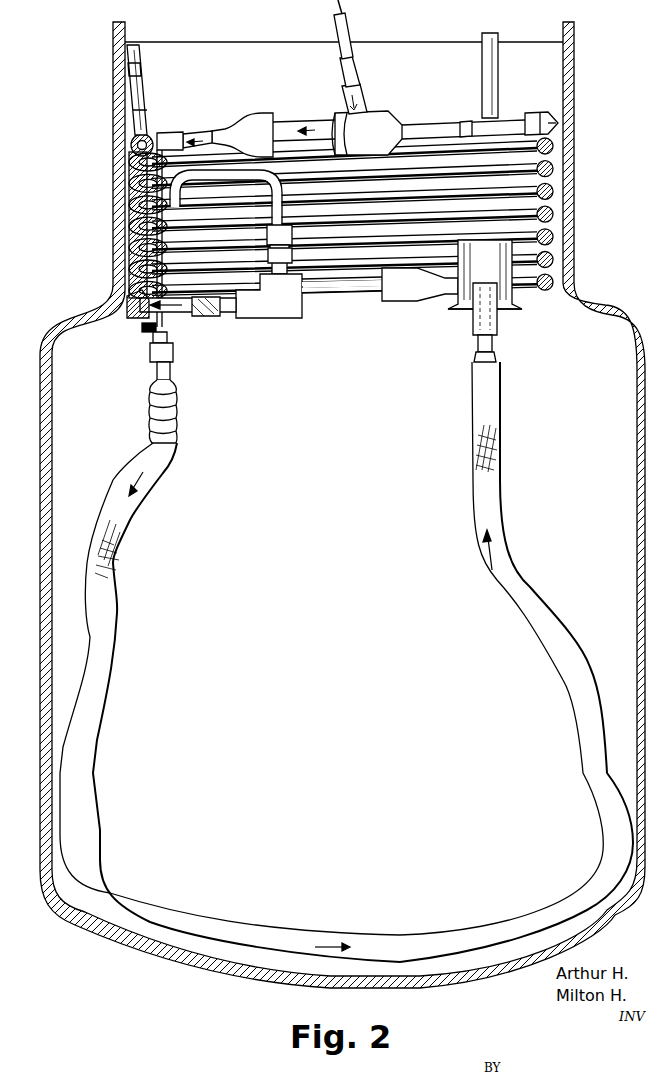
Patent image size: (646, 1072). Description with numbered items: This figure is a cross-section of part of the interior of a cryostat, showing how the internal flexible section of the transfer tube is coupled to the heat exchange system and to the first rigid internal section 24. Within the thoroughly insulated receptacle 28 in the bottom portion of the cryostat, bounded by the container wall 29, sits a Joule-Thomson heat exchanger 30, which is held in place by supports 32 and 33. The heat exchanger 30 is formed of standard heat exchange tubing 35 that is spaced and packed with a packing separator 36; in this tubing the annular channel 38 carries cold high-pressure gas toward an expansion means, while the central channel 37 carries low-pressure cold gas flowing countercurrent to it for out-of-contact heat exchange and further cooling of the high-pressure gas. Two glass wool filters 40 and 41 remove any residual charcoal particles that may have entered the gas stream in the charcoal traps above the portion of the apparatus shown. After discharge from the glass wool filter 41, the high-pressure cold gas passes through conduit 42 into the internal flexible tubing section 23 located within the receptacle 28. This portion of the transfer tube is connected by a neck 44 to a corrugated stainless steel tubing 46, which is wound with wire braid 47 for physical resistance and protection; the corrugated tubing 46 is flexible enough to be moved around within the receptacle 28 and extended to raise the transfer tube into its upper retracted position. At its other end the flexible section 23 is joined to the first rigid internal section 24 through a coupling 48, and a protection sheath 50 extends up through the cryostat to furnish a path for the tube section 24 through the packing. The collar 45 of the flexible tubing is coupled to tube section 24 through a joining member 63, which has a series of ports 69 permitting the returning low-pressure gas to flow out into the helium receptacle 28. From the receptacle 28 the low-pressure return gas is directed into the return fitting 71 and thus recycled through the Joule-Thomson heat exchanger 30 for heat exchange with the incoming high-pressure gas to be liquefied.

The internal flexible tubing section 23 is at (124, 465).
The first rigid internal section 24 is at (486, 270).
The receptacle 28 is at (354, 693).
The container wall 29 is at (573, 153).
The Joule-Thomson heat exchanger 30 is at (430, 117).
The support 32 is at (492, 78).
The support 33 is at (138, 77).
The tubing 35 is at (188, 135).
The packing separator 36 is at (160, 136).
The central channel 37 is at (353, 49).
The annular channel 38 is at (366, 82).
The glass wool filter 40 is at (310, 123).
The glass wool filter 41 is at (410, 297).
The conduit 42 is at (129, 168).
The neck 44 is at (166, 373).
The collar 45 is at (496, 357).
The corrugated stainless steel tubing 46 is at (170, 410).
The wire braid 47 is at (108, 543).
The coupling 48 is at (470, 358).
The protection sheath 50 is at (512, 307).
The joining member 63 is at (493, 340).
The ports 69 is at (473, 330).
The return fitting 71 is at (220, 312).